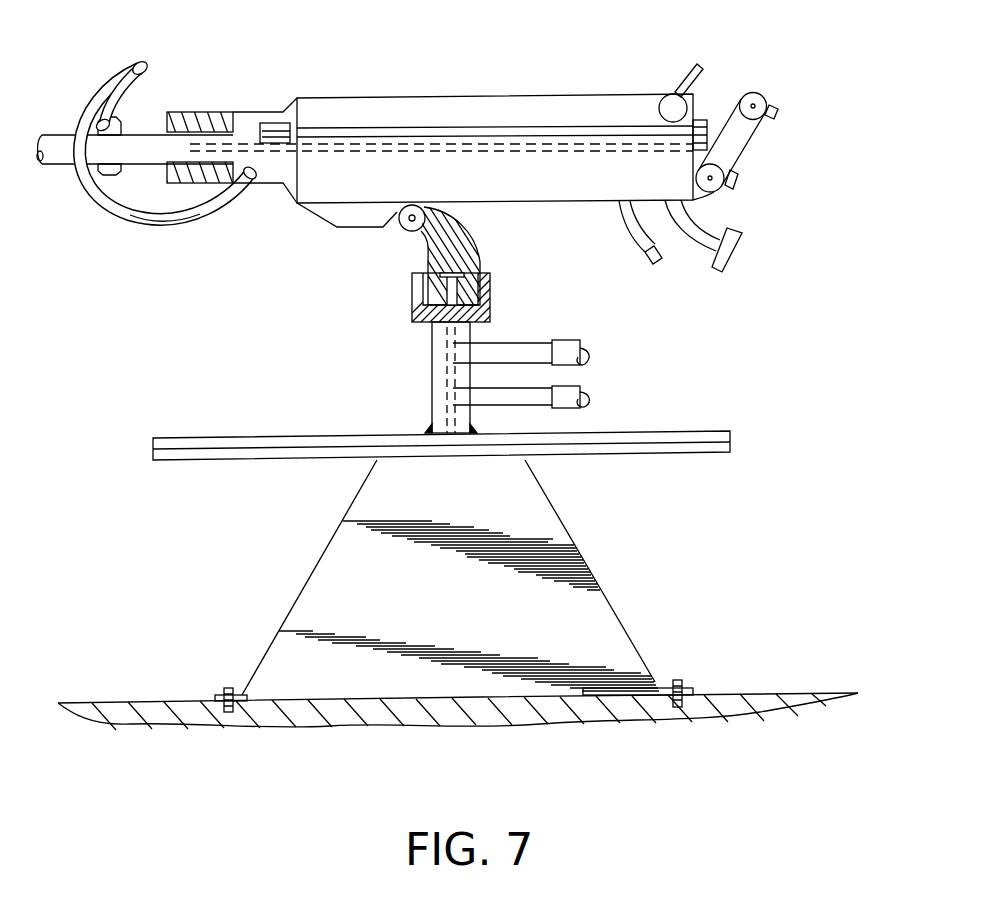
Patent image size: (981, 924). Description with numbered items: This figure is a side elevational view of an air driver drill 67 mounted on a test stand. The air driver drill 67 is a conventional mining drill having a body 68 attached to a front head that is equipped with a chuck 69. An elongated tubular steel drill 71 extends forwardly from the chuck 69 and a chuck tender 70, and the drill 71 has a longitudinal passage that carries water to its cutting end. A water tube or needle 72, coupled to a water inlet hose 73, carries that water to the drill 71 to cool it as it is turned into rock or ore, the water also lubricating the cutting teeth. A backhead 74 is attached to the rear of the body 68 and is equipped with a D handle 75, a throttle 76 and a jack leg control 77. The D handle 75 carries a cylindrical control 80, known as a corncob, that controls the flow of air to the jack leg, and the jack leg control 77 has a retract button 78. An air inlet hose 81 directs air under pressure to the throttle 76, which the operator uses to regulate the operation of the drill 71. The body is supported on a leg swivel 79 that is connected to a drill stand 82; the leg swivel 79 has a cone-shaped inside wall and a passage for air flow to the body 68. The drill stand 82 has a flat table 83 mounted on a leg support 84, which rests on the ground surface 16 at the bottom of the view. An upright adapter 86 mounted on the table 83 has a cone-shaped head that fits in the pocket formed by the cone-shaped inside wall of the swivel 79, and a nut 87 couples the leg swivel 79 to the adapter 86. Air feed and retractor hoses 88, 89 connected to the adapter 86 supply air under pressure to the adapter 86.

The ground surface 16 is at (136, 702).
The air driver drill 67 is at (520, 46).
The body 68 is at (568, 94).
The chuck 69 is at (202, 176).
The chuck tender 70 is at (194, 224).
The drill 71 is at (57, 130).
The water tube 72 is at (327, 142).
The water inlet hose 73 is at (647, 250).
The backhead 74 is at (635, 94).
The D handle 75 is at (830, 52).
The throttle 76 is at (710, 66).
The jack leg control 77 is at (766, 89).
The retract button 78 is at (779, 120).
The leg swivel 79 is at (462, 243).
The cylindrical control 80 is at (481, 273).
The air inlet hose 81 is at (740, 250).
The drill stand 82 is at (272, 402).
The table 83 is at (163, 438).
The leg support 84 is at (300, 594).
The adapter 86 is at (432, 374).
The nut 87 is at (414, 323).
The air feed hose 88 is at (582, 404).
The retractor hose 89 is at (586, 363).